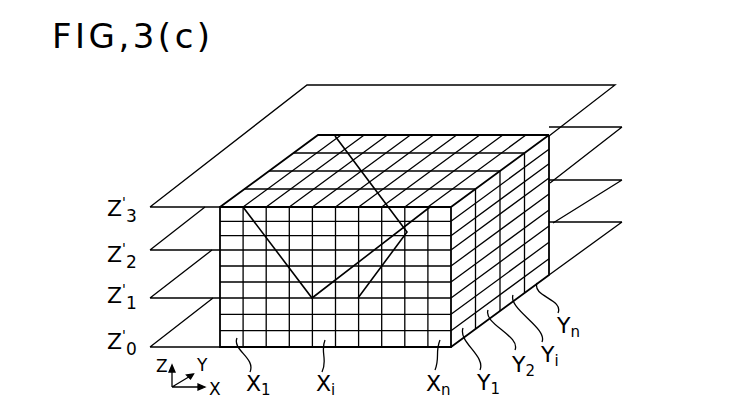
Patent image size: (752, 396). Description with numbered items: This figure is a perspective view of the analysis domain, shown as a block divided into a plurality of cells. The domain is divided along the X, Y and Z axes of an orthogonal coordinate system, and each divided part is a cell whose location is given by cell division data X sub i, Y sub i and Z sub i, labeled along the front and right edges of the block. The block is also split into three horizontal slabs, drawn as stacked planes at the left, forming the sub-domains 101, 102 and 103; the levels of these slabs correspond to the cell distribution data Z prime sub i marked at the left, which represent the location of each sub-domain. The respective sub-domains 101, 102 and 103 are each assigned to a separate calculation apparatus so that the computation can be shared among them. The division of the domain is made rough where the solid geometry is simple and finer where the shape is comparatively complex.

The sub-domain 101 is at (627, 181).
The sub-domain 102 is at (627, 129).
The sub-domain 103 is at (627, 86).